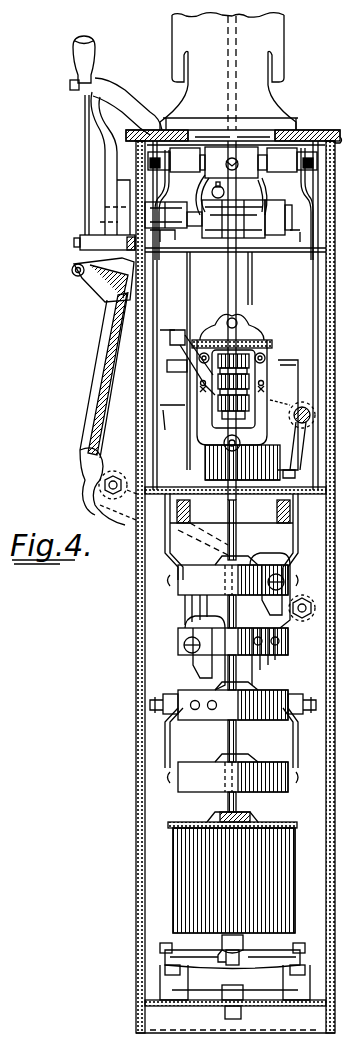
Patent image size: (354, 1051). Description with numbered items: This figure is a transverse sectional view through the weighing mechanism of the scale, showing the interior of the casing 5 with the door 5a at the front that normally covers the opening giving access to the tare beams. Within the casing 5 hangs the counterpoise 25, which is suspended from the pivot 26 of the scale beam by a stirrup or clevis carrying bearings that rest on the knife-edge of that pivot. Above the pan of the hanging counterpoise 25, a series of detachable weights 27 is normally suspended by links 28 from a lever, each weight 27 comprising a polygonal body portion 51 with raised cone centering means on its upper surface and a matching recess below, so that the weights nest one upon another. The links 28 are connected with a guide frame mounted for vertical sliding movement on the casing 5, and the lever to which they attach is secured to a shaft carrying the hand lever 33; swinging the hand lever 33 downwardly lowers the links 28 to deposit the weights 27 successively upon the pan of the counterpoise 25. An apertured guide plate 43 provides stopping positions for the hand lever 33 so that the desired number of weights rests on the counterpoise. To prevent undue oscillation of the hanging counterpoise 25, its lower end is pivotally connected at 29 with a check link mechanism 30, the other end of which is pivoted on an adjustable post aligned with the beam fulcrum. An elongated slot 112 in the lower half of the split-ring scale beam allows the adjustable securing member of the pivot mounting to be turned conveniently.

The casing 5 is at (135, 826).
The door 5a is at (80, 468).
The hand lever 33 is at (78, 125).
The guide plate 43 is at (86, 167).
The links 28 is at (312, 297).
The elongated slot 112 is at (232, 382).
The detachable weights 27 is at (282, 703).
The body portion 51 is at (270, 788).
The hanging counterpoise 25 is at (232, 872).
The pivotal connection 29 is at (224, 964).
The check link mechanism 30 is at (272, 955).
The pivot 26 is at (348, 208).